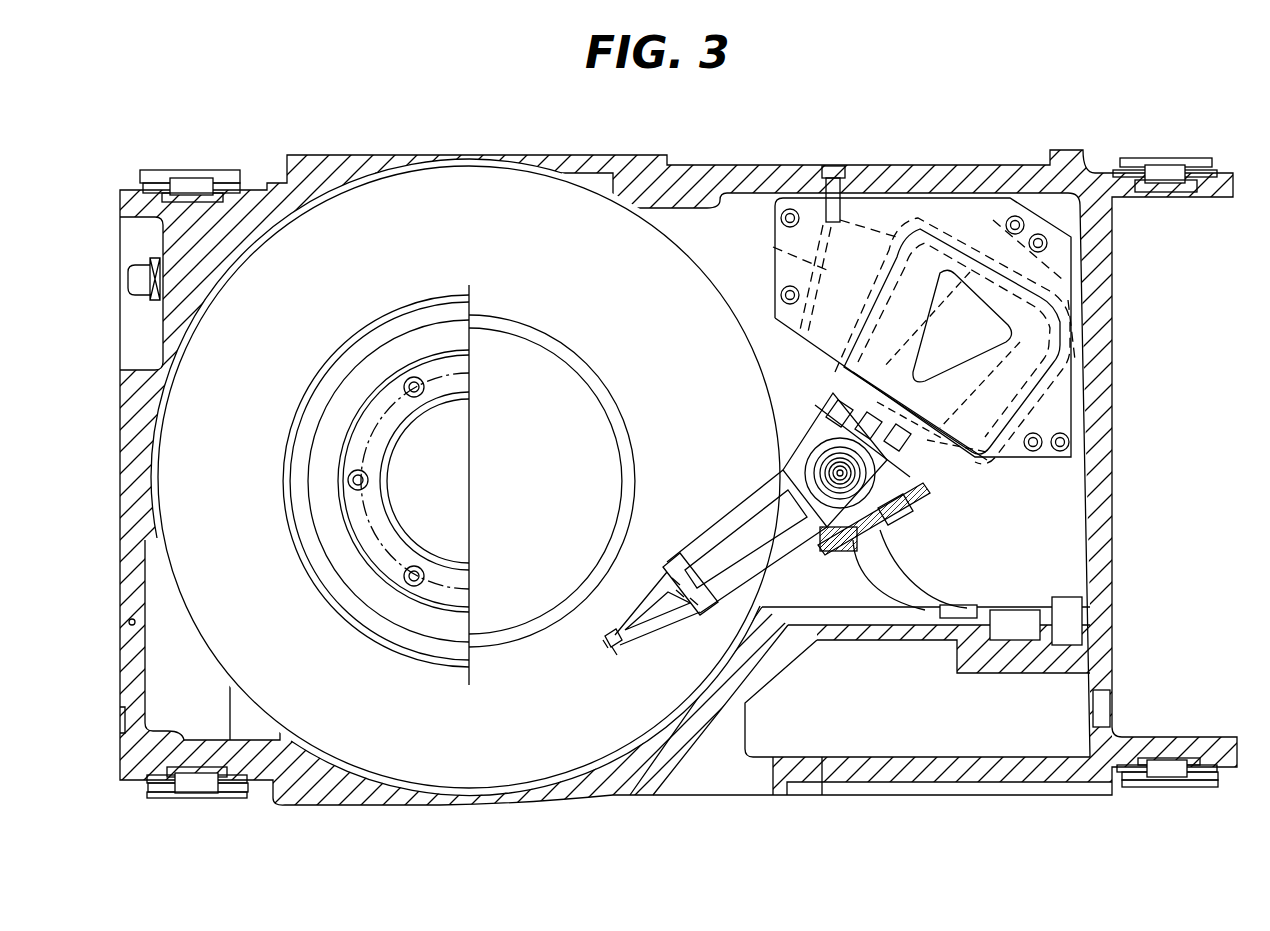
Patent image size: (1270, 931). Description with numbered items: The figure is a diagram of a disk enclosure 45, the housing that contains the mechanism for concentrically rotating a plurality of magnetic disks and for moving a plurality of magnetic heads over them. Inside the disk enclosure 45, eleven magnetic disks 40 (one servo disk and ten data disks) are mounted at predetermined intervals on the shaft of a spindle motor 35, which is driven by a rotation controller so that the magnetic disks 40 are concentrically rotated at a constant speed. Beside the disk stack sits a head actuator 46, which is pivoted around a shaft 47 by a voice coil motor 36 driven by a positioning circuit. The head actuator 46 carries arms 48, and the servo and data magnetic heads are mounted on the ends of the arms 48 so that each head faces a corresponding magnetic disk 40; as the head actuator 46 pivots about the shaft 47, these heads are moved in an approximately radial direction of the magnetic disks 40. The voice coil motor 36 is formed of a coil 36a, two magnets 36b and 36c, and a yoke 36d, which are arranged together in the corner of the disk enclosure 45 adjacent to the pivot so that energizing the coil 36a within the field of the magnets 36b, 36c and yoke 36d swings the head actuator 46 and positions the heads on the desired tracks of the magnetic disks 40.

The spindle motor 35 is at (547, 370).
The voice coil motor 36 is at (880, 226).
The coil 36a is at (952, 331).
The magnet 36b is at (773, 247).
The magnet 36c is at (1088, 362).
The yoke 36d is at (783, 330).
The magnetic disk 40 is at (545, 763).
The disk enclosure 45 is at (1113, 508).
The head actuator 46 is at (945, 452).
The shaft 47 is at (815, 452).
The arm 48 is at (718, 527).